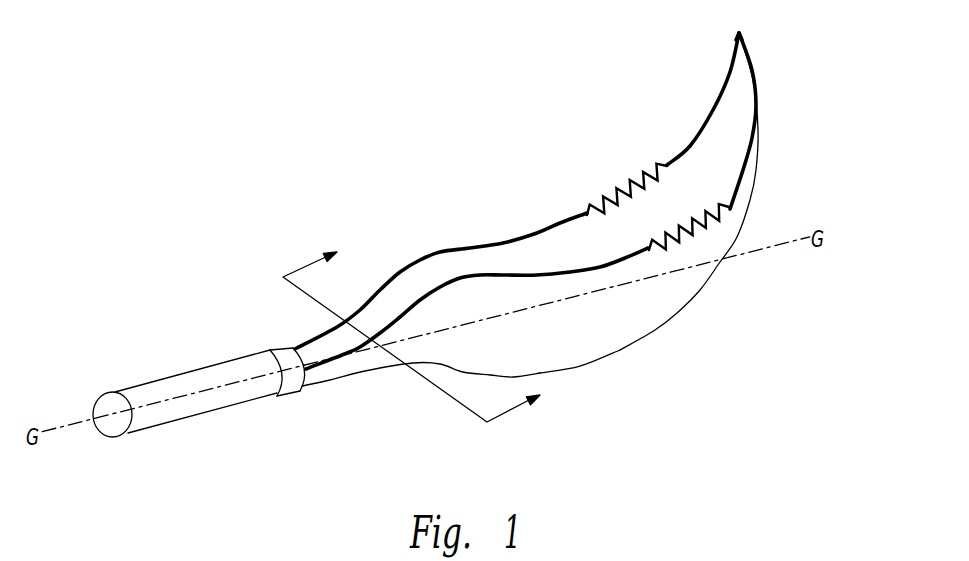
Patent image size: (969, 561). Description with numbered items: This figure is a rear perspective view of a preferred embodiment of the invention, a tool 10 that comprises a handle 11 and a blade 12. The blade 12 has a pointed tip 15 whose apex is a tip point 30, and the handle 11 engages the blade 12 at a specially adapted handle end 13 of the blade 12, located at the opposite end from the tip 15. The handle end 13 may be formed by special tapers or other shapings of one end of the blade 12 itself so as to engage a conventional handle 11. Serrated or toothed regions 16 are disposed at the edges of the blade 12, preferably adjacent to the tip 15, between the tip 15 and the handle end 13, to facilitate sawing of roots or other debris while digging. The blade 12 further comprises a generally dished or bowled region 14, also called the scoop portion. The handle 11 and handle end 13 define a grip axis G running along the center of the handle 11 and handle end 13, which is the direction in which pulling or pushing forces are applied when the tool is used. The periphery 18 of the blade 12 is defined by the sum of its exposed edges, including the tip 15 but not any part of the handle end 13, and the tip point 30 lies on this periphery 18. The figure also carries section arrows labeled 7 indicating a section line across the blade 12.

The tool 10 is at (302, 180).
The handle 11 is at (170, 423).
The blade 12 is at (630, 347).
The handle end 13 is at (363, 372).
The dished region 14 is at (600, 333).
The pointed tip 15 is at (737, 117).
The serrated regions 16 is at (700, 215).
The periphery 18 is at (600, 267).
The tip point 30 is at (741, 33).
The section line 7 is at (423, 329).